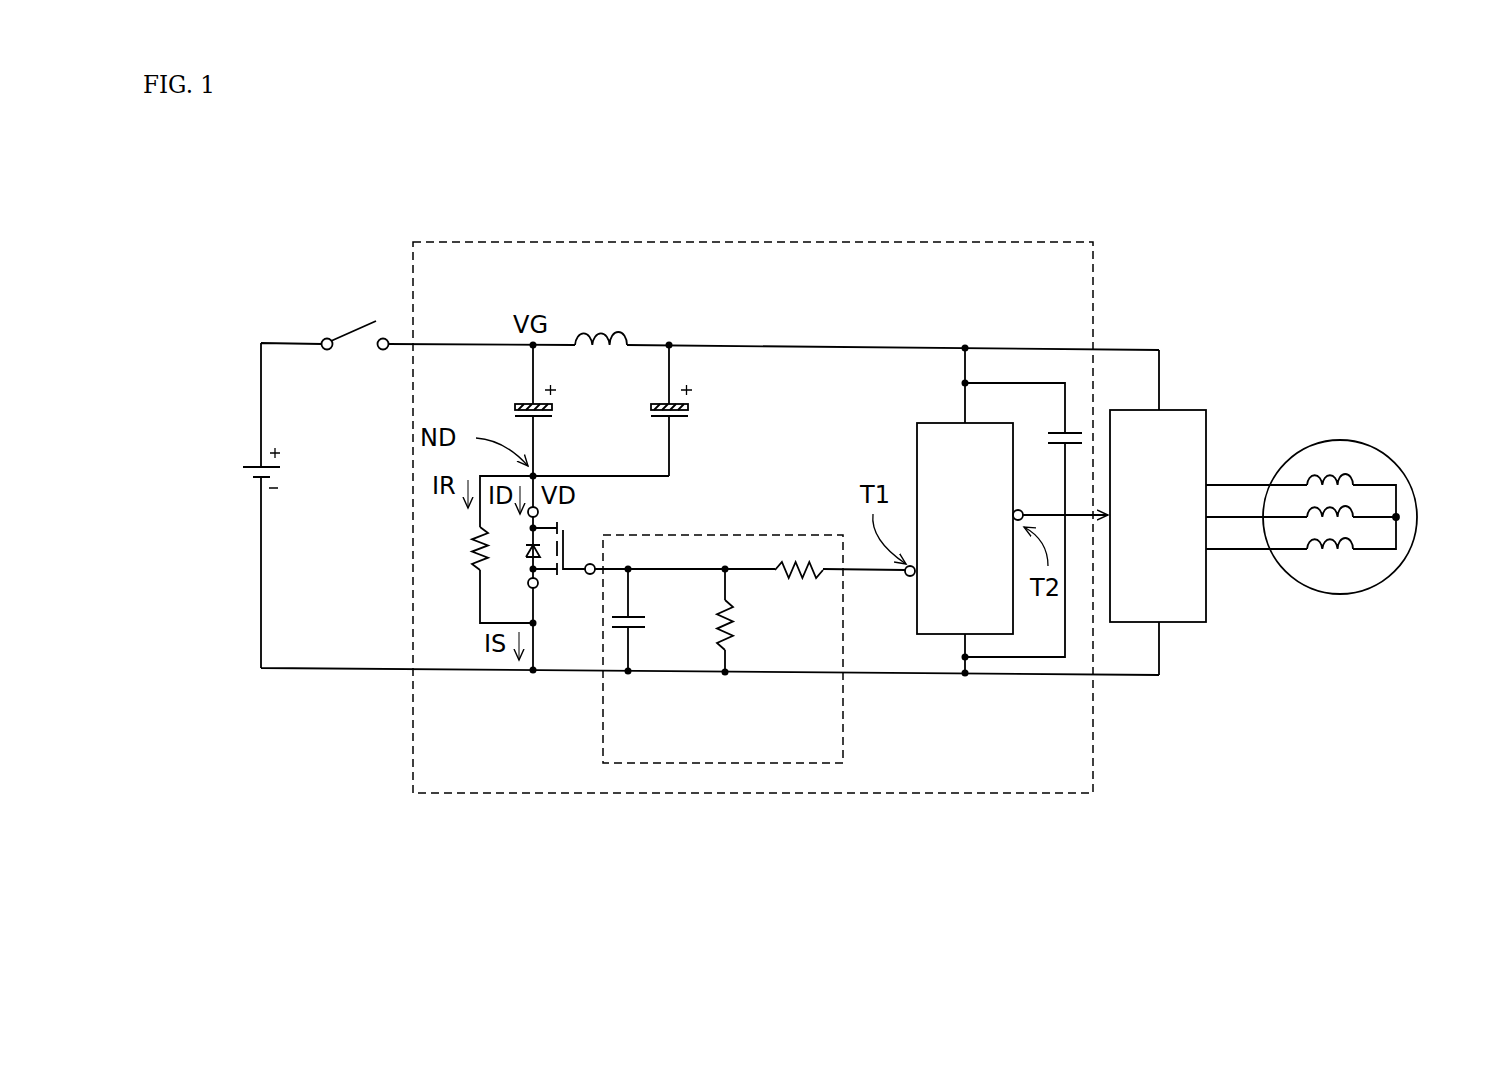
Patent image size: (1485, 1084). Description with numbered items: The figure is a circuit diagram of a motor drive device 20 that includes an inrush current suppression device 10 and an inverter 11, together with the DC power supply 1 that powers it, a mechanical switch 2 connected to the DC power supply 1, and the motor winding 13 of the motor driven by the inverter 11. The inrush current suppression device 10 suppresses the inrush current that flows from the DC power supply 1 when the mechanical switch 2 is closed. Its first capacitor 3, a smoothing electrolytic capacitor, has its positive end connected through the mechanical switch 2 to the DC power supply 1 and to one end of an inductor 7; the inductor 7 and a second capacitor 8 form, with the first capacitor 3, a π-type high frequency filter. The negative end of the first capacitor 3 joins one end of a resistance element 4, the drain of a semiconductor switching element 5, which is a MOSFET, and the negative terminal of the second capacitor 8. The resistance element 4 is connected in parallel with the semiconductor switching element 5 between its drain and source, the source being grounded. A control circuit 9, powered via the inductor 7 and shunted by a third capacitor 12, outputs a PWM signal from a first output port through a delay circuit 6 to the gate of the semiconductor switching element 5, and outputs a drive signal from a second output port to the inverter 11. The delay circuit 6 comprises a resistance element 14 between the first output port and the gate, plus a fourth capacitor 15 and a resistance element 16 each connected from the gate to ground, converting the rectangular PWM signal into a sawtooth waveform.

The DC power supply 1 is at (242, 456).
The mechanical switch 2 is at (354, 311).
The first capacitor 3 is at (568, 405).
The resistance element 4 is at (460, 567).
The semiconductor switching element 5 is at (582, 530).
The delay circuit 6 is at (845, 754).
The inductor 7 is at (605, 328).
The second capacitor 8 is at (702, 405).
The control circuit 9 is at (950, 422).
The inrush current suppression device 10 is at (896, 243).
The inverter 11 is at (1183, 410).
The third capacitor 12 is at (1052, 452).
The motor winding 13 is at (1380, 441).
The resistance element 14 is at (806, 590).
The fourth capacitor 15 is at (648, 612).
The resistance element 16 is at (746, 644).
The motor drive device 20 is at (1224, 236).